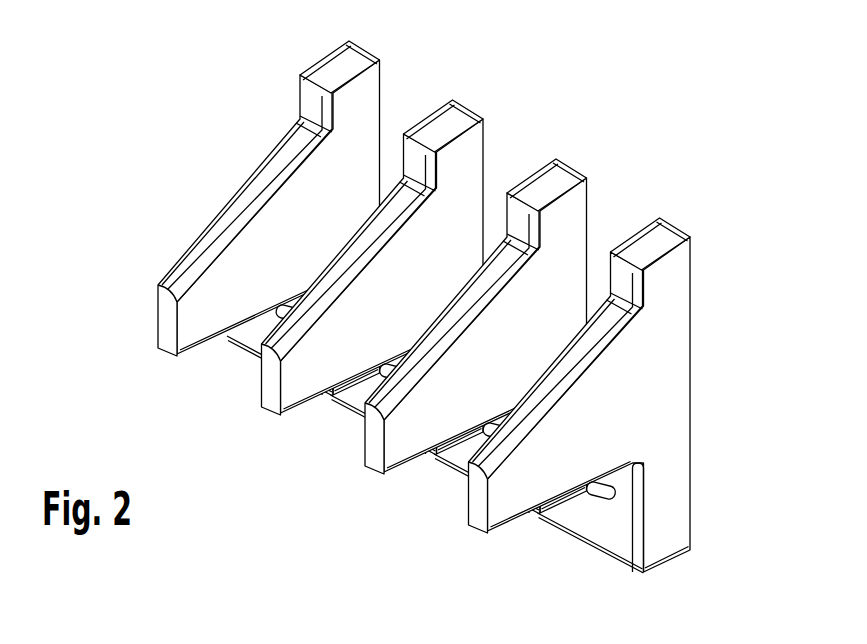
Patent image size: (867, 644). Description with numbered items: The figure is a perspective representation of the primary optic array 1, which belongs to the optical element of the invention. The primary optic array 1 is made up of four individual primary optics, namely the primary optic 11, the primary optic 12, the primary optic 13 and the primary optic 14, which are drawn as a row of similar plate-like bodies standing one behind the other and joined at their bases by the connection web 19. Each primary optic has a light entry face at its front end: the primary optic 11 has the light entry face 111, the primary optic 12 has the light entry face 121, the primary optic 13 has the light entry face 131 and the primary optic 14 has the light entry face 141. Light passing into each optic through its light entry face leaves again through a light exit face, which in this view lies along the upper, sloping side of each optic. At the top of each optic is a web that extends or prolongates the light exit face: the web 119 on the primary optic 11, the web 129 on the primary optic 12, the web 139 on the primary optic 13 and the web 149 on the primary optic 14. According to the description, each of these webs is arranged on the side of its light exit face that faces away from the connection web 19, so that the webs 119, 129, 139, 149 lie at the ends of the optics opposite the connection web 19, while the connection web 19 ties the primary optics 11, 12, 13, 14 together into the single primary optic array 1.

The primary optic array 1 is at (441, 316).
The primary optic 11 is at (233, 199).
The primary optic 12 is at (355, 247).
The primary optic 13 is at (457, 308).
The primary optic 14 is at (597, 413).
The connection web 19 is at (609, 545).
The light entry face 111 is at (158, 338).
The light entry face 121 is at (266, 401).
The light entry face 131 is at (370, 461).
The light entry face 141 is at (474, 518).
The web 119 is at (330, 67).
The web 129 is at (453, 113).
The web 139 is at (556, 170).
The web 149 is at (661, 232).